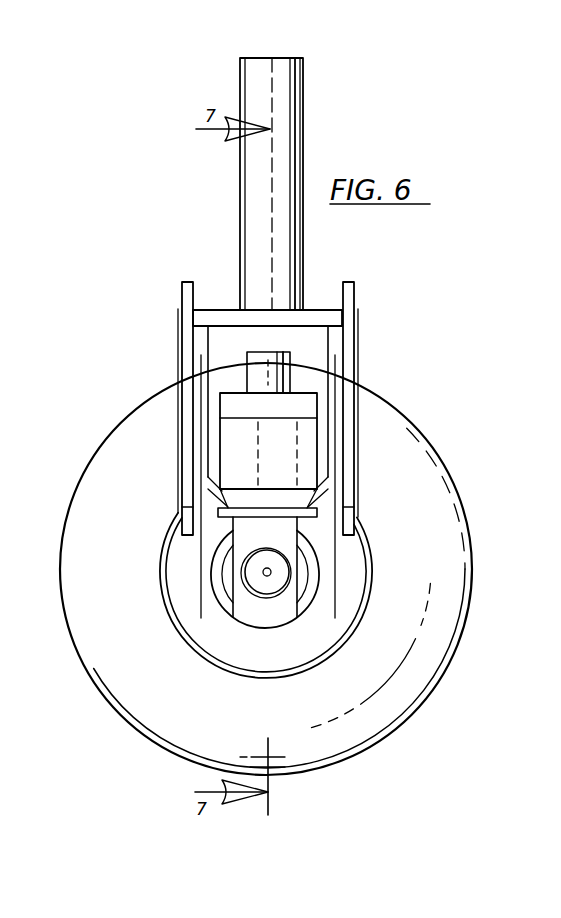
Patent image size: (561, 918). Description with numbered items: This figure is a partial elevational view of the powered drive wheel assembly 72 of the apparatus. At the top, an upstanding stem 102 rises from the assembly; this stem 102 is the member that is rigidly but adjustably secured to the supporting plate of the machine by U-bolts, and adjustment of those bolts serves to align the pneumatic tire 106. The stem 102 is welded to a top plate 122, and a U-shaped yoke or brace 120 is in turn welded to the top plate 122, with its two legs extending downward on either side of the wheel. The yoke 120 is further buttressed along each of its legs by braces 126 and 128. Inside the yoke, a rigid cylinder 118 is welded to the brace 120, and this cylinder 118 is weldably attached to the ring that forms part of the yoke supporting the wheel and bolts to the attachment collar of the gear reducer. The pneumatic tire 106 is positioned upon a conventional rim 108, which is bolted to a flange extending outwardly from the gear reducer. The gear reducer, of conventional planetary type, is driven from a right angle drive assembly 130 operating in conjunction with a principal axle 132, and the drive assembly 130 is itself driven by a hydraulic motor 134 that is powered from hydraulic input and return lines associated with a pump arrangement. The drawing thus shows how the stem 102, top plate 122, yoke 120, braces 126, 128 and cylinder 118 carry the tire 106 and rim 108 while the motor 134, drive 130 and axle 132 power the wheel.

The drive wheel assembly 72 is at (458, 249).
The upstanding stem 102 is at (285, 121).
The pneumatic tire 106 is at (435, 500).
The rim 108 is at (368, 562).
The rigid cylinder 118 is at (320, 513).
The U-shaped yoke or brace 120 is at (308, 637).
The top plate 122 is at (317, 315).
The brace 126 is at (346, 332).
The brace 128 is at (188, 336).
The right angle drive assembly 130 is at (250, 608).
The principal axle 132 is at (268, 585).
The hydraulic motor 134 is at (304, 404).